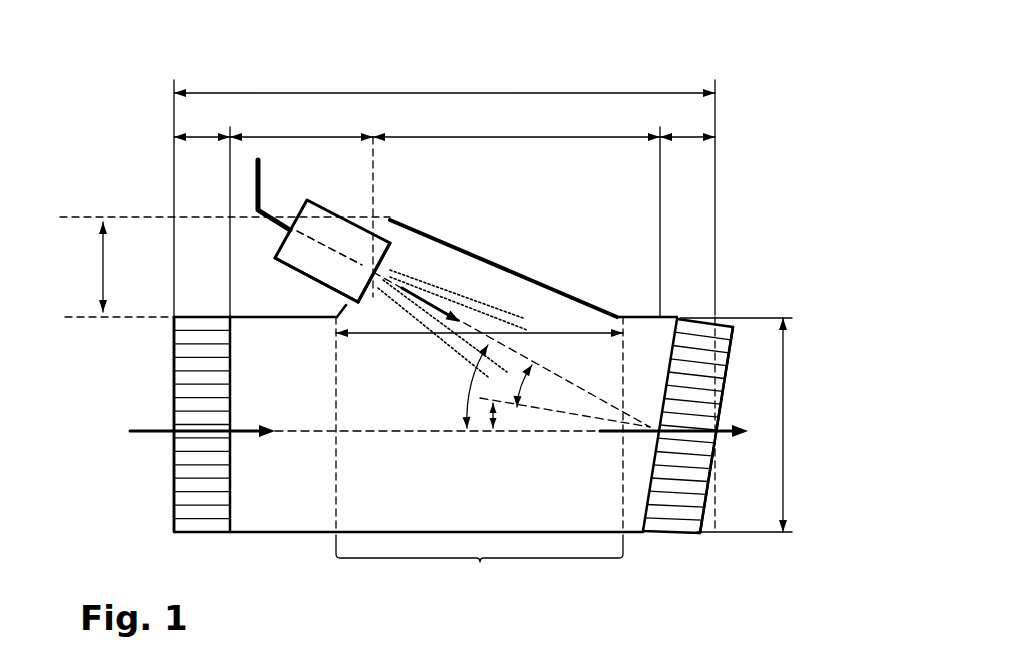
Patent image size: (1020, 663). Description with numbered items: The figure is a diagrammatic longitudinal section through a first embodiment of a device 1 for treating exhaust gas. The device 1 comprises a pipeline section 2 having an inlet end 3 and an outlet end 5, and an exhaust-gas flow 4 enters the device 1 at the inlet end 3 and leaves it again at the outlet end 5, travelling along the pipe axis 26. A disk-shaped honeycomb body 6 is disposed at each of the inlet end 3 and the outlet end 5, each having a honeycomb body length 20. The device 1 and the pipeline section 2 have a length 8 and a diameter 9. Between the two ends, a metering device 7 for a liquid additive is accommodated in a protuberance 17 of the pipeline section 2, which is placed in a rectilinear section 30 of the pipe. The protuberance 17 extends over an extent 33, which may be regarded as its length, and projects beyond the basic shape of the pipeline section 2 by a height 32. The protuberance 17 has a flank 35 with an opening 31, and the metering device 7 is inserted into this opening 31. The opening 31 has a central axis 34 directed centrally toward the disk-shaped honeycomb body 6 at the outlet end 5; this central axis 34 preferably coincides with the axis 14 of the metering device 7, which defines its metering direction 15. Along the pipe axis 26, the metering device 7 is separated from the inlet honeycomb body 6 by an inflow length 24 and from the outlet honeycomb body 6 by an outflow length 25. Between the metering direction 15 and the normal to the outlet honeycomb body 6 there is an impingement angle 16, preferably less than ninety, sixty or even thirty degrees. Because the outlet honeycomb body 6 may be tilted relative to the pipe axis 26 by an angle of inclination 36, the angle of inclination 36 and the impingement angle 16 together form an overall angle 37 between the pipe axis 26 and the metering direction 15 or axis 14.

The device 1 is at (112, 187).
The pipeline section 2 is at (637, 538).
The inlet end 3 is at (174, 532).
The exhaust-gas flow 4 is at (146, 430).
The outlet end 5 is at (700, 533).
The disk-shaped honeycomb body 6 is at (208, 337).
The metering device 7 is at (334, 212).
The length 8 is at (590, 92).
The diameter 9 is at (784, 418).
The axis 14 is at (572, 383).
The metering direction 15 is at (437, 285).
The impingement angle 16 is at (520, 387).
The protuberance 17 is at (513, 272).
The honeycomb body length 20 is at (208, 137).
The inflow length 24 is at (258, 137).
The outflow length 25 is at (477, 137).
The pipe axis 26 is at (405, 440).
The rectilinear section 30 is at (480, 563).
The opening 31 is at (389, 219).
The height 32 is at (102, 270).
The extent 33 is at (391, 335).
The central axis 34 is at (360, 263).
The flank 35 is at (341, 306).
The angle of inclination 36 is at (503, 413).
The overall angle 37 is at (460, 406).